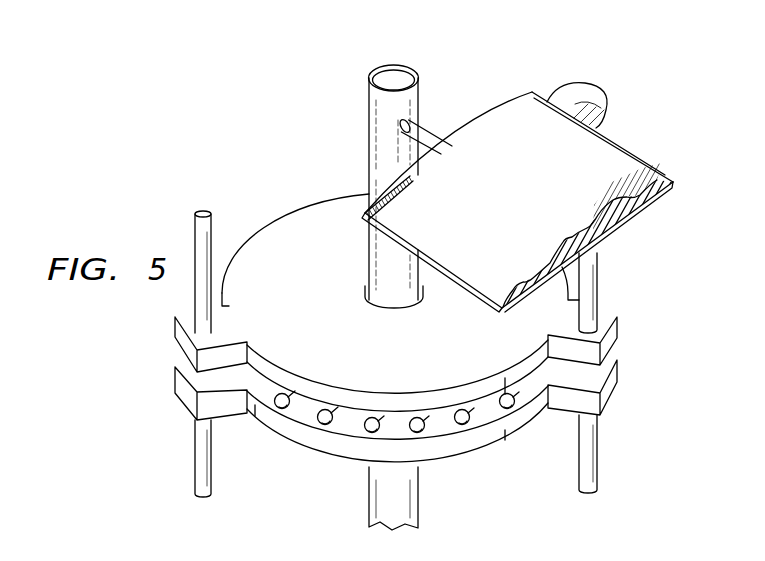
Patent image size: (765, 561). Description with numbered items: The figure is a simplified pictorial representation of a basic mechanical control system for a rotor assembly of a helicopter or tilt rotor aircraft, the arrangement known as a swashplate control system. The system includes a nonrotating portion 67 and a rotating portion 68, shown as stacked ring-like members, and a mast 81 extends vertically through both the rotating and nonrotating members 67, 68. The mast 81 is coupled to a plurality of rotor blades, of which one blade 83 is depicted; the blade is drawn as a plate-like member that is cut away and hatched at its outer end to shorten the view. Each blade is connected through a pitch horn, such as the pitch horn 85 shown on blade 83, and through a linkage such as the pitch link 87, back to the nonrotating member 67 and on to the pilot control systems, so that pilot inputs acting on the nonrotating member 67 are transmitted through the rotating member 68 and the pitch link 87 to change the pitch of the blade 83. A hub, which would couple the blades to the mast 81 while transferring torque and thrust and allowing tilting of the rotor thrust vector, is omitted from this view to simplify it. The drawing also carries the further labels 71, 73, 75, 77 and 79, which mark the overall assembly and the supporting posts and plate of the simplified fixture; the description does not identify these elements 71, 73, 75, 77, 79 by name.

The pitch horn test fixture assembly 71 is at (278, 110).
The disc plate 75 is at (312, 215).
The nonrotating portion 67 is at (433, 455).
The rotating portion 68 is at (318, 392).
The clamp blocks 73 is at (205, 388).
The left guide rod 77 is at (198, 455).
The right guide rod 79 is at (593, 453).
The pitch link 87 is at (590, 270).
The mast 81 is at (382, 113).
The blade 83 is at (500, 123).
The pitch horn 85 is at (582, 92).